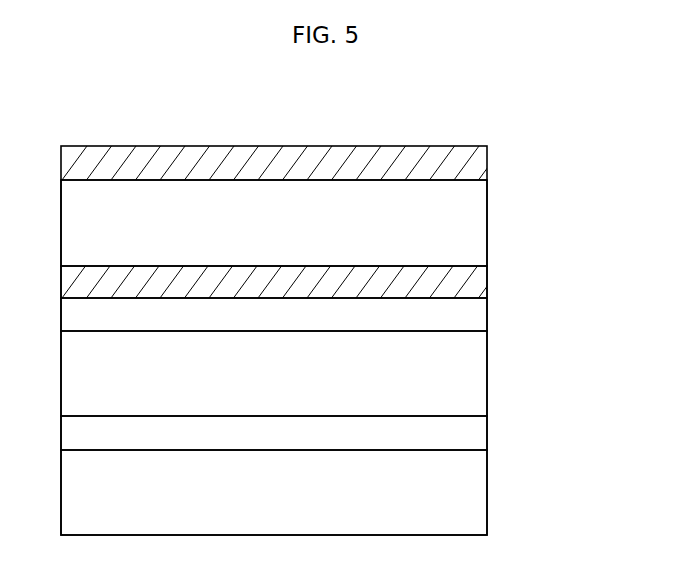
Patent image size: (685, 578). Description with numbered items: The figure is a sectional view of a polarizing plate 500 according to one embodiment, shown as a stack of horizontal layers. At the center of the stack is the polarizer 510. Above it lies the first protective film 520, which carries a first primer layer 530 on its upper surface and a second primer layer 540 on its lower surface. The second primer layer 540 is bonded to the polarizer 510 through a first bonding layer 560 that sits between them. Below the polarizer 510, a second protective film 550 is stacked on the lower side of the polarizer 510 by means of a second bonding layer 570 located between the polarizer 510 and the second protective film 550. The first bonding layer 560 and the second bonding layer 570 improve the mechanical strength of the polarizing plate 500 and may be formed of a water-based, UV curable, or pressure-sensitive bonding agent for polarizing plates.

The polarizing plate 500 is at (573, 78).
The polarizer 510 is at (481, 381).
The first protective film 520 is at (481, 236).
The first primer layer 530 is at (487, 163).
The second primer layer 540 is at (487, 284).
The second protective film 550 is at (481, 503).
The first bonding layer 560 is at (481, 314).
The second bonding layer 570 is at (487, 433).